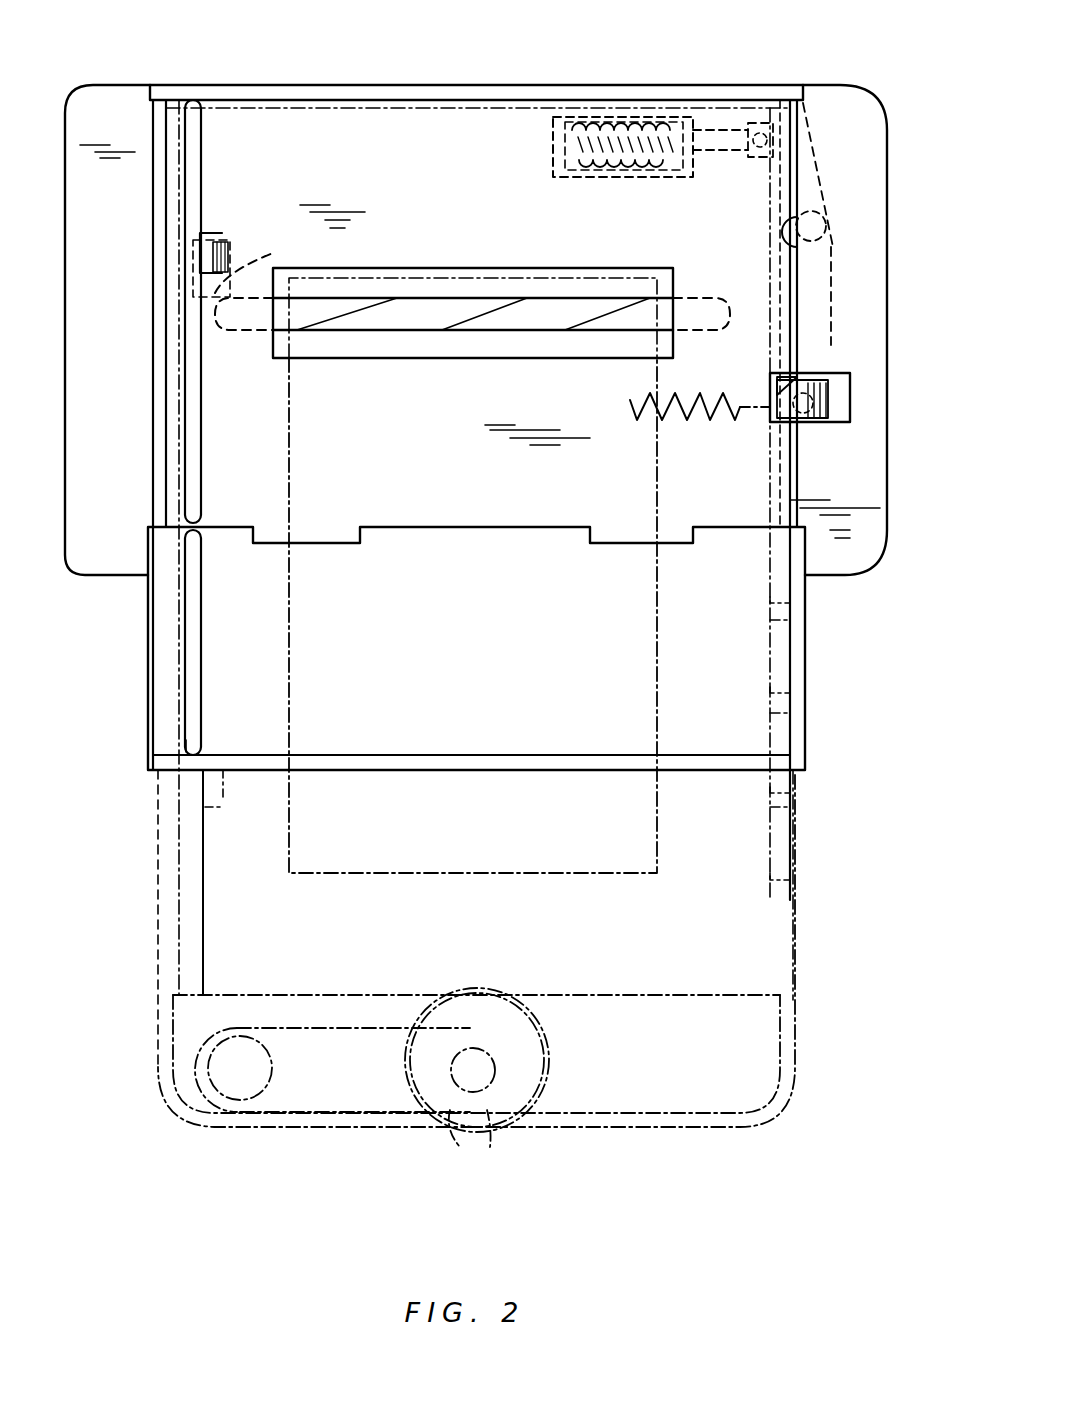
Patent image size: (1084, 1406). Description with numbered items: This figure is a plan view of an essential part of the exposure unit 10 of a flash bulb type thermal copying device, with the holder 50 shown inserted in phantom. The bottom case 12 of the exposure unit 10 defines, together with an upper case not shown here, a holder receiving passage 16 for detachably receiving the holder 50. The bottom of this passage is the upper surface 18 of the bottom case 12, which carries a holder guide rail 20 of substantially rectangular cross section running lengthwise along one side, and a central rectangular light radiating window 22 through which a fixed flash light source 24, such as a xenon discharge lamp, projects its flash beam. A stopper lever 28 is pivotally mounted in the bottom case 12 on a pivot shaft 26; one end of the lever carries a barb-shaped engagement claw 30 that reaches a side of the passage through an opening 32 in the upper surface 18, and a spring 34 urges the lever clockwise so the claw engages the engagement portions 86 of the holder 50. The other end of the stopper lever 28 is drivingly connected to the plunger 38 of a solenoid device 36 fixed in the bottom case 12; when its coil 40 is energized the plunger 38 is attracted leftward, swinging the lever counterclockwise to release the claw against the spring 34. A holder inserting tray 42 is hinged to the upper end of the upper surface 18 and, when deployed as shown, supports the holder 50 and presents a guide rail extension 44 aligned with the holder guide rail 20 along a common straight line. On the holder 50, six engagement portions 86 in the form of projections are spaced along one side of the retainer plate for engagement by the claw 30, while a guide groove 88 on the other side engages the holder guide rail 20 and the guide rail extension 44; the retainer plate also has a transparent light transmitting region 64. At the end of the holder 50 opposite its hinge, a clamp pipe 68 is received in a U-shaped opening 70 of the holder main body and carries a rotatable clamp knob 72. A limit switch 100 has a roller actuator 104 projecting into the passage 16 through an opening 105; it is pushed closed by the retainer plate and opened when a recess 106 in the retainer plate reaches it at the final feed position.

The exposure unit 10 is at (892, 222).
The bottom case 12 is at (868, 128).
The holder receiving passage 16 is at (448, 500).
The upper surface 18 is at (398, 115).
The holder guide rail 20 is at (193, 150).
The light radiating window 22 is at (535, 343).
The flash light source 24 is at (440, 307).
The pivot shaft 26 is at (815, 243).
The stopper lever 28 is at (833, 343).
The engagement claw 30 is at (800, 390).
The opening 32 is at (800, 372).
The spring 34 is at (718, 425).
The solenoid device 36 is at (658, 176).
The plunger 38 is at (717, 155).
The coil 40 is at (610, 117).
The holder inserting tray 42 is at (775, 645).
The guide rail extension 44 is at (193, 722).
The holder 50 is at (797, 1002).
The light transmitting region 64 is at (385, 873).
The clamp pipe 68 is at (462, 1160).
The U-shaped opening 70 is at (490, 1140).
The clamp knob 72 is at (442, 1153).
The engagement portions 86 is at (785, 450).
The guide groove 88 is at (193, 967).
The limit switch 100 is at (273, 254).
The roller actuator 104 is at (230, 246).
The opening 105 is at (222, 242).
The recess 106 is at (222, 793).